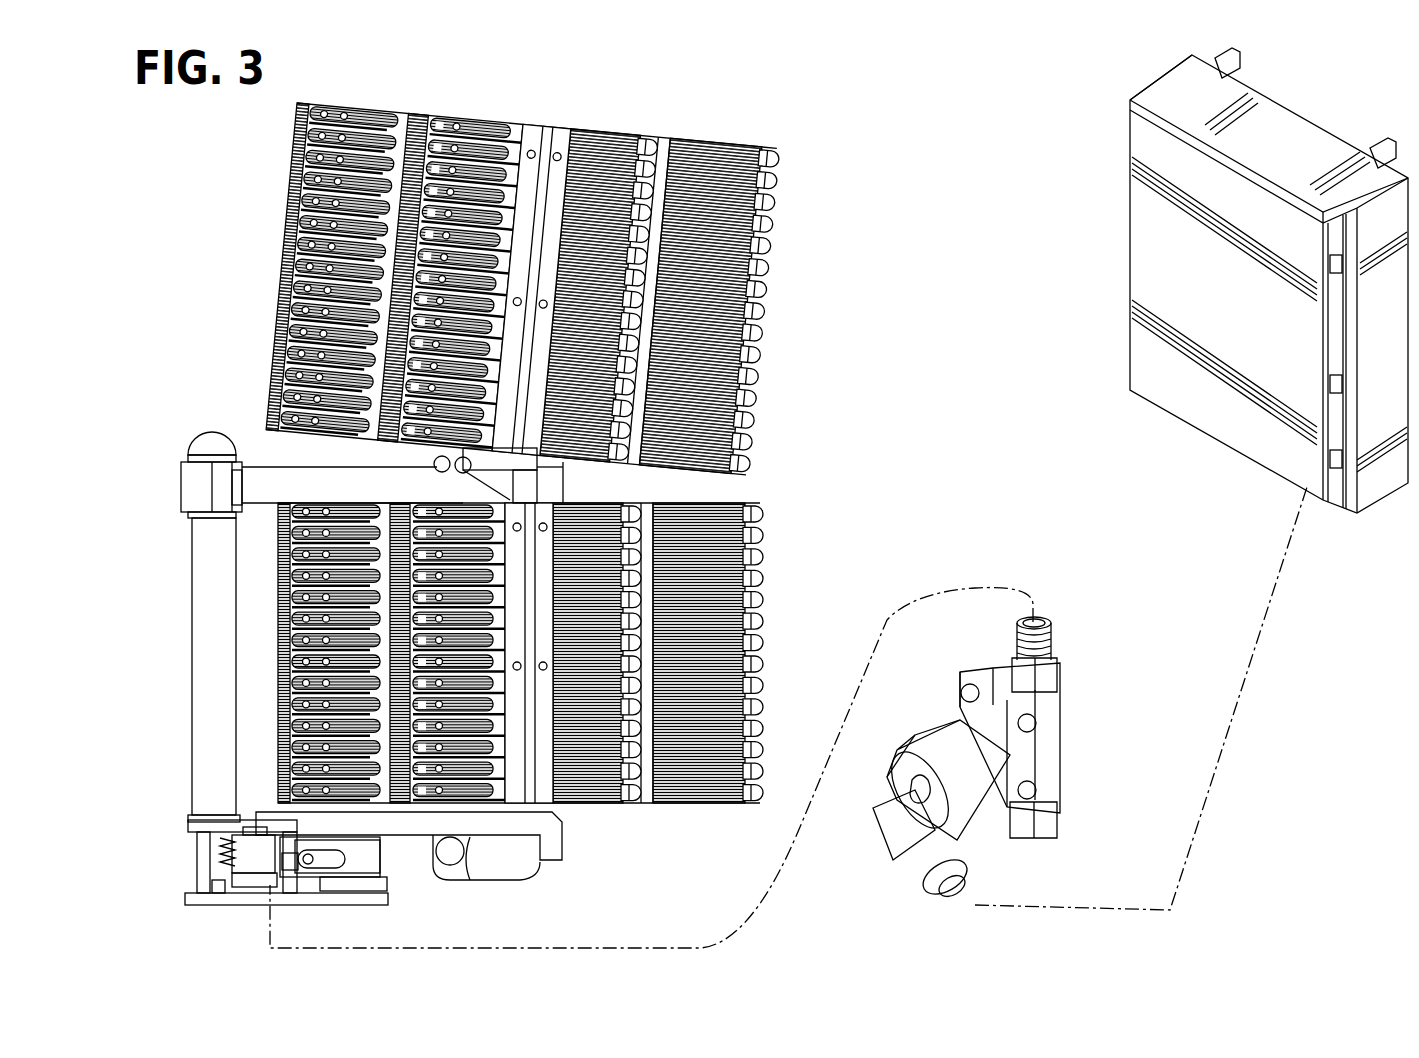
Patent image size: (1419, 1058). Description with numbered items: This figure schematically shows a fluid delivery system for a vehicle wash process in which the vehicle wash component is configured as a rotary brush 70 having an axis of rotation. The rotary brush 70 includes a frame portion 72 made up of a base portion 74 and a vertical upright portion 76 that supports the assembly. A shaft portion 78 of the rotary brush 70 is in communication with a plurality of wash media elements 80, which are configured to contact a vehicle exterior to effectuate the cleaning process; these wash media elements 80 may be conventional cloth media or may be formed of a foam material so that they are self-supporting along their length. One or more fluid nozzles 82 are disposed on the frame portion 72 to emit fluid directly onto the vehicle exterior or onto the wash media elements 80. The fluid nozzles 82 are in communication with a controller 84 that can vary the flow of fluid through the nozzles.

The rotary brush 70 is at (723, 86).
The frame portion 72 is at (212, 445).
The base portion 74 is at (238, 896).
The vertical upright portion 76 is at (190, 733).
The shaft portion 78 is at (552, 127).
The wash media elements 80 is at (772, 288).
The fluid nozzles 82 is at (265, 860).
The controller 84 is at (1248, 310).